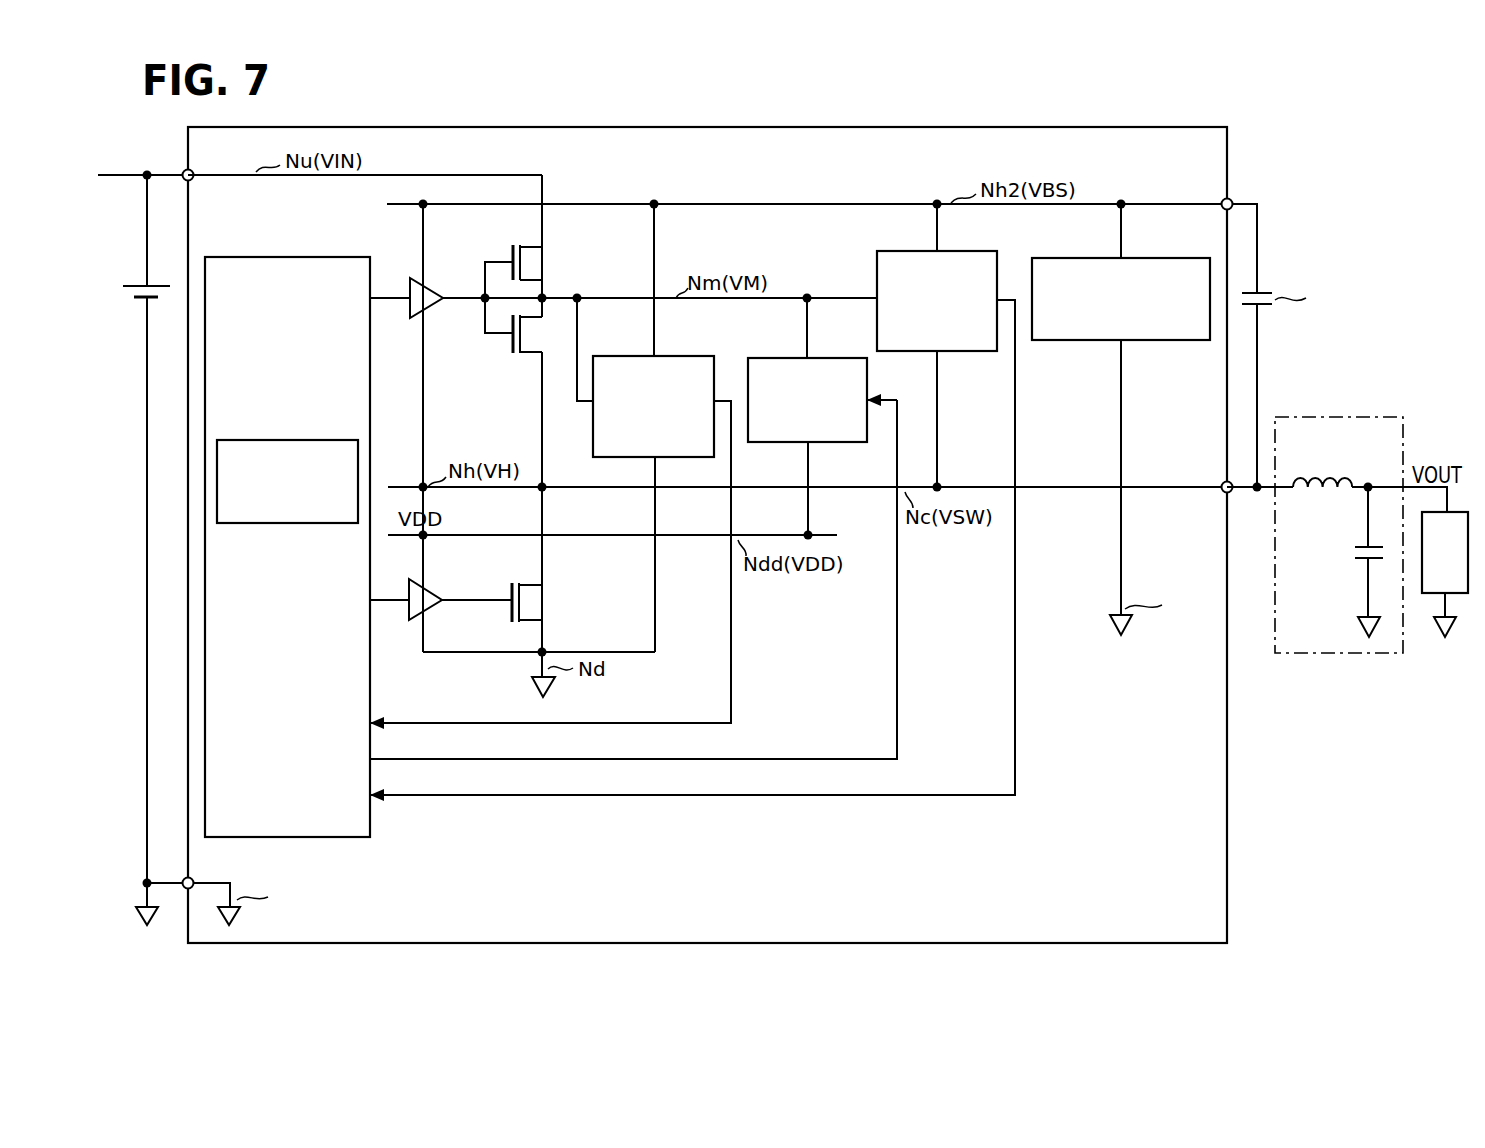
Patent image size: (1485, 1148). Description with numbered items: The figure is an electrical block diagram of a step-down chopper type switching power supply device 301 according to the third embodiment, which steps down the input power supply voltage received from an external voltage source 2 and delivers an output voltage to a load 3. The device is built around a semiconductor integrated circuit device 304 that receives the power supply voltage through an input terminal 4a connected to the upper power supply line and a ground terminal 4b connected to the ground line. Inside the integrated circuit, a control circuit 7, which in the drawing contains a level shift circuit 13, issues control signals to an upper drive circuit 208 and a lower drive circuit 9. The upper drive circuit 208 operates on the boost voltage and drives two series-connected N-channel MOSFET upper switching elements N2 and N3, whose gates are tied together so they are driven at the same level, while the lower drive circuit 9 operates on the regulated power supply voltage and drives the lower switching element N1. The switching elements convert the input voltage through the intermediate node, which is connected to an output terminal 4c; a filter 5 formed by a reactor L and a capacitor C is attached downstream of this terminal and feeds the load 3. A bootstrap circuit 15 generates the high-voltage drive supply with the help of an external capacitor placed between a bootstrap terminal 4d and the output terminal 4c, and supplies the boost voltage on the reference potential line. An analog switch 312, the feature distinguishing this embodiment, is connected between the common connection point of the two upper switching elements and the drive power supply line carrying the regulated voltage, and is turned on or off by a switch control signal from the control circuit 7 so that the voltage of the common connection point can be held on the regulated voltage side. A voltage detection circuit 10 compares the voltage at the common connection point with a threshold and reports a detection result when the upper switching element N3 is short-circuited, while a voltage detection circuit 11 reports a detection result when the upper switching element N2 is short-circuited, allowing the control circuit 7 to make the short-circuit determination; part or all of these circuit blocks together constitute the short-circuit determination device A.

The voltage source 2 is at (140, 283).
The load 3 is at (1429, 596).
The input terminal 4a is at (183, 170).
The ground terminal 4b is at (184, 880).
The output terminal 4c is at (1231, 494).
The bootstrap terminal 4d is at (1230, 199).
The filter 5 is at (1361, 502).
The control circuit 7 is at (291, 255).
The lower drive circuit 9 is at (405, 590).
The voltage detection circuit 10 is at (672, 355).
The voltage detection circuit 11 is at (971, 250).
The level shift circuit 13 is at (287, 439).
The bootstrap circuit 15 is at (1156, 257).
The upper drive circuit 208 is at (408, 288).
The switching power supply device 301 is at (1320, 186).
The semiconductor integrated circuit device 304 is at (768, 126).
The analog switch 312 is at (832, 357).
The short-circuit determination device A is at (843, 186).
The lower switching element N1 is at (540, 598).
The upper switching element N2 is at (513, 360).
The upper switching element N3 is at (540, 263).
The reactor L is at (1312, 496).
The capacitor C is at (1350, 556).